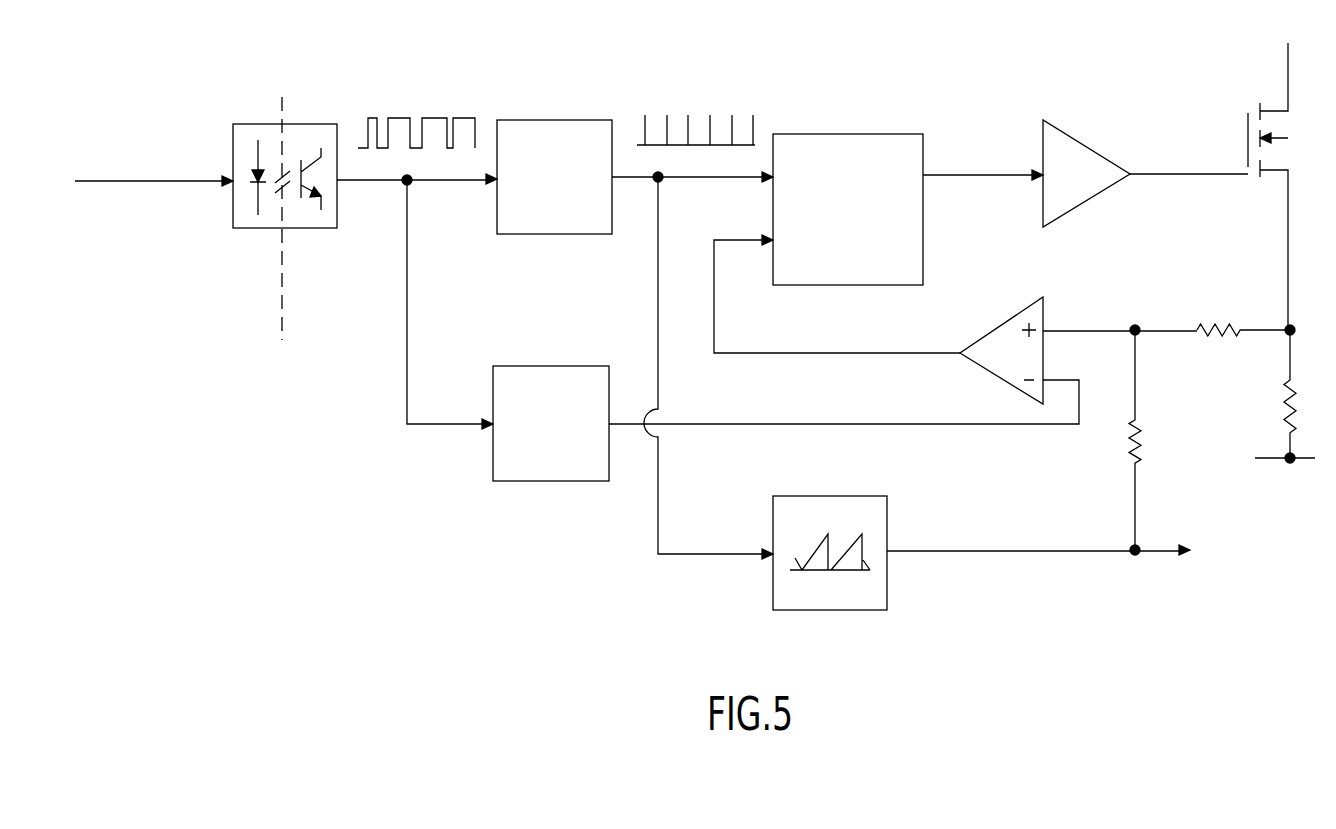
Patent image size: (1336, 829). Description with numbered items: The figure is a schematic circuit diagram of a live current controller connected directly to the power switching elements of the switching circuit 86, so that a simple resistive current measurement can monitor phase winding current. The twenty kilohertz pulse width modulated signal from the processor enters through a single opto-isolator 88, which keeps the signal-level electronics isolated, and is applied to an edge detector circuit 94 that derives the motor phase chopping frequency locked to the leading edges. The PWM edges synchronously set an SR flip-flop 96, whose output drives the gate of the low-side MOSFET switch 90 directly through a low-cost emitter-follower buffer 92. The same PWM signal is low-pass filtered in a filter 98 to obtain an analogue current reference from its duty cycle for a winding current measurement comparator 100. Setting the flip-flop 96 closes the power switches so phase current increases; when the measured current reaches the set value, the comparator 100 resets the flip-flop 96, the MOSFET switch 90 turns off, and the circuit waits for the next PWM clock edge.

The switching circuit 86 is at (1012, 82).
The opto-isolator 88 is at (243, 229).
The power MOSFET 90 is at (1280, 136).
The emitter-follower buffer 92 is at (1100, 148).
The edge detector circuit 94 is at (515, 234).
The SR flip-flop 96 is at (862, 134).
The filter 98 is at (560, 366).
The winding current measurement comparator 100 is at (1003, 320).